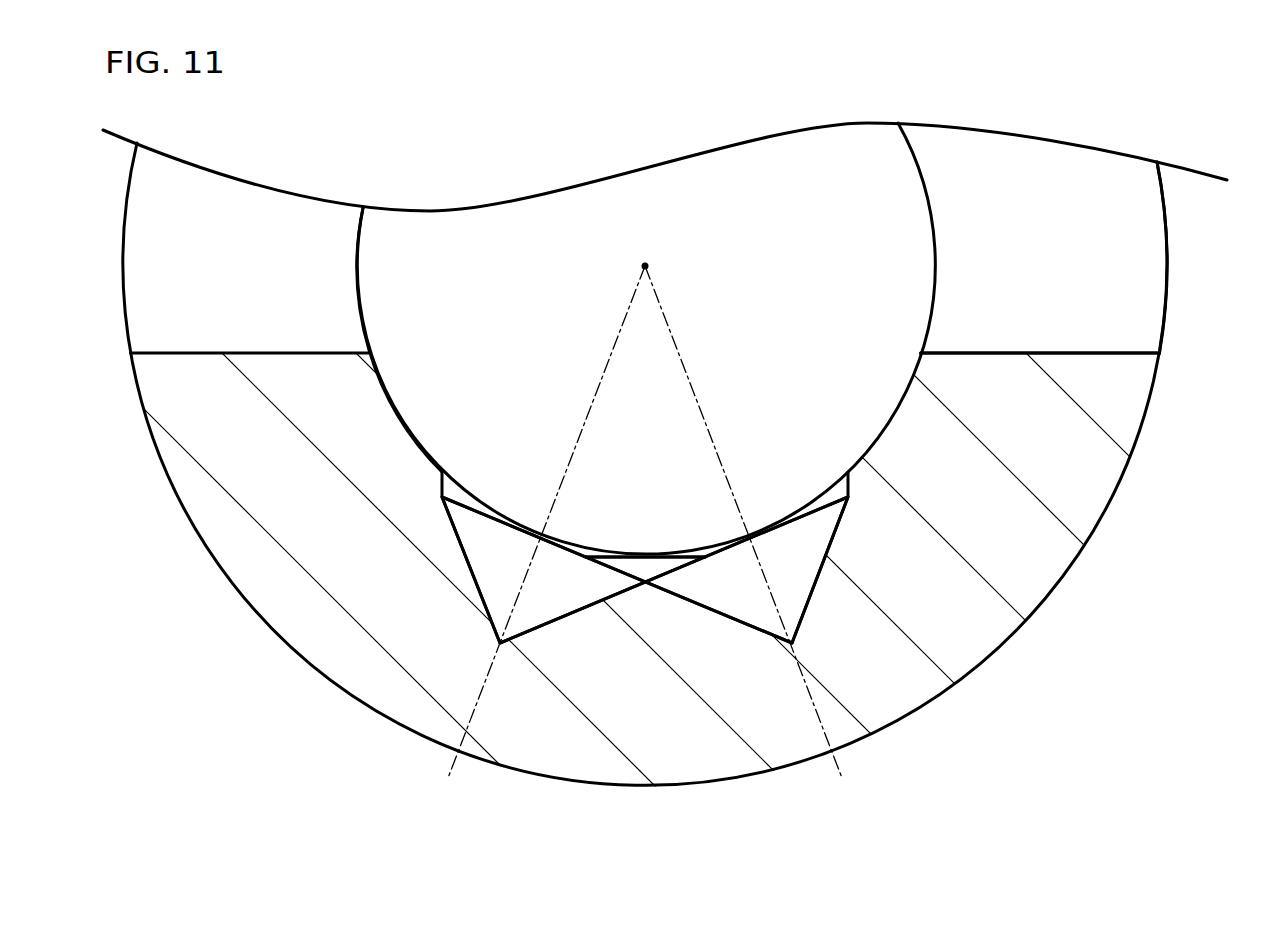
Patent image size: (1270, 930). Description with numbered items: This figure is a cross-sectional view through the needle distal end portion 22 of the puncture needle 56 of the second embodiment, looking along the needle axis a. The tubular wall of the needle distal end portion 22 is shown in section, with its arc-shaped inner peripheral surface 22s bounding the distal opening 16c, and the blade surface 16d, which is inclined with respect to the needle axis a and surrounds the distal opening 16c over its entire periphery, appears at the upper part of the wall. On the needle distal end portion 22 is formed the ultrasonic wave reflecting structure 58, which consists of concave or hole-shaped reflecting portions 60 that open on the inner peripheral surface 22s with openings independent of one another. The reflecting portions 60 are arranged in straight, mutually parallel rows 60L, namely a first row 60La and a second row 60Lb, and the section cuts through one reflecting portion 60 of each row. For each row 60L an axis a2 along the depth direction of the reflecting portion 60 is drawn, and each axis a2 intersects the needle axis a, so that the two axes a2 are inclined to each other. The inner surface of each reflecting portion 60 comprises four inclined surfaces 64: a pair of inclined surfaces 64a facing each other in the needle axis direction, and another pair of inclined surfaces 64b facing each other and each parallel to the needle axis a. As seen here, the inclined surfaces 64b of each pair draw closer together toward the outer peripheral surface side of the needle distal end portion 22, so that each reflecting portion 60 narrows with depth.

The puncture needle 56 is at (464, 96).
The distal opening 16c is at (926, 207).
The blade surface 16d is at (1127, 262).
The needle distal end portion 22 is at (1040, 615).
The inner peripheral surface 22s is at (385, 383).
The ultrasonic wave reflecting structure 58 is at (660, 439).
The reflecting portion 60 is at (645, 505).
The row 60L is at (645, 505).
The first row 60La is at (495, 488).
The second row 60Lb is at (797, 488).
The inclined surface 64 is at (637, 563).
The inclined surface 64a is at (717, 577).
The inclined surface 64b is at (573, 612).
The needle axis a is at (655, 255).
The axis a2 is at (647, 538).